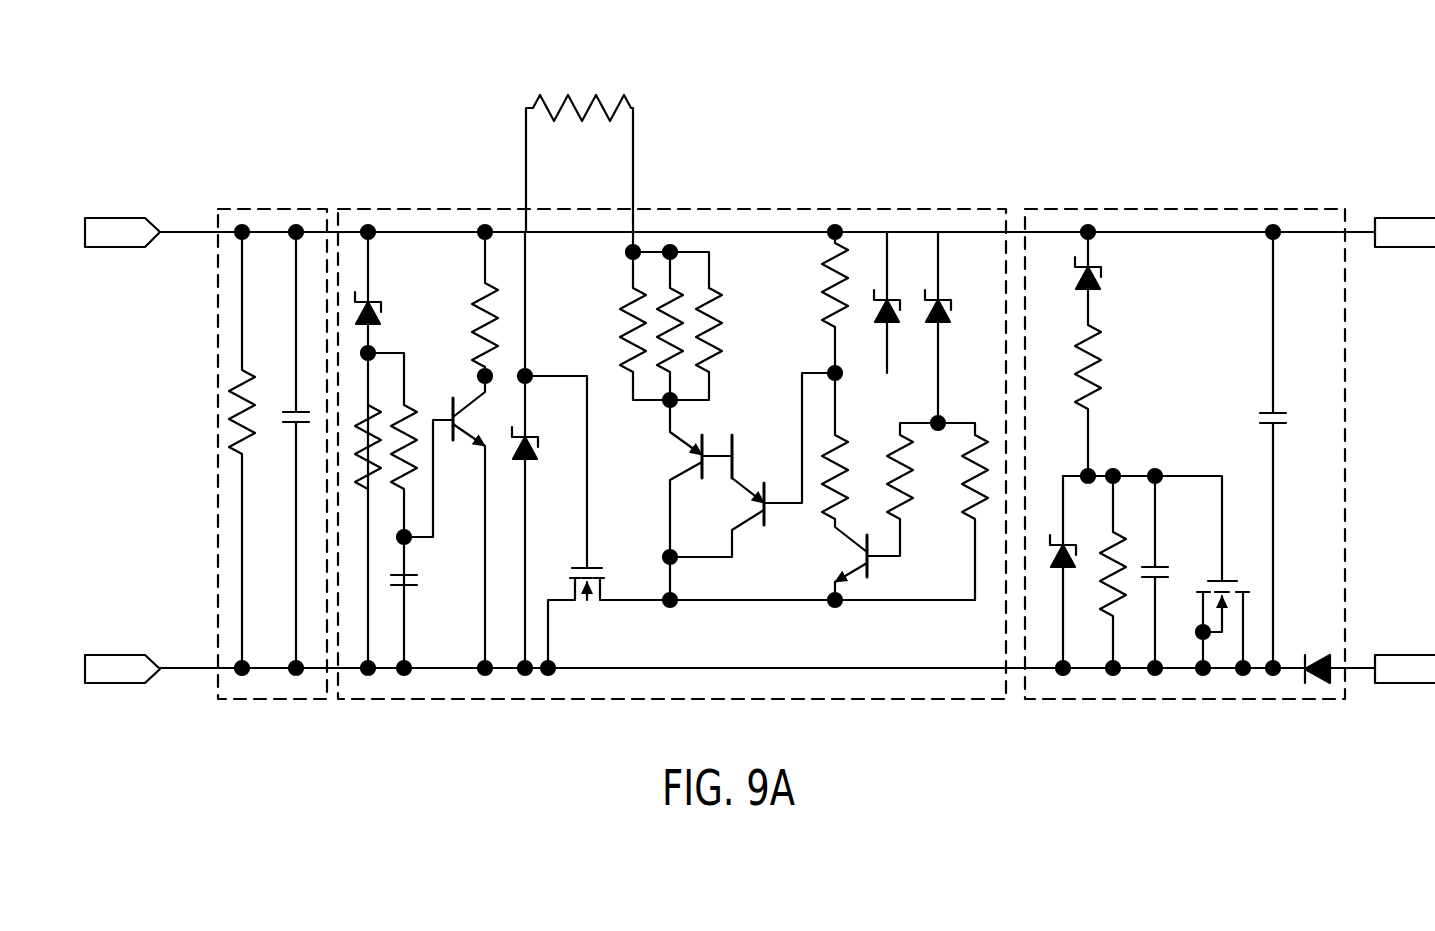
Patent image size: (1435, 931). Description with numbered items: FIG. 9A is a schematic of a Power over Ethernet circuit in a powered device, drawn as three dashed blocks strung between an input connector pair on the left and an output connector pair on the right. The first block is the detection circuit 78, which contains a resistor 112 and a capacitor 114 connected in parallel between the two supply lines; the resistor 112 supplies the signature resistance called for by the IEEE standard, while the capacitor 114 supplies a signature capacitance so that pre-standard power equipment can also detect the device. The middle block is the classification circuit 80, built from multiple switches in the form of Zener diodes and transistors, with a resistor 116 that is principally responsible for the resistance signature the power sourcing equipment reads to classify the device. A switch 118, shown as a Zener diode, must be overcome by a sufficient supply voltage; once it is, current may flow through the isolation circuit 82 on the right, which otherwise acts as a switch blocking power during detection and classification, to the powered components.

The detection circuit 78 is at (273, 210).
The classification circuit 80 is at (423, 210).
The isolation circuit 82 is at (1175, 210).
The resistor 112 is at (242, 428).
The capacitor 114 is at (295, 420).
The resistor 116 is at (602, 97).
The switch 118 is at (525, 407).